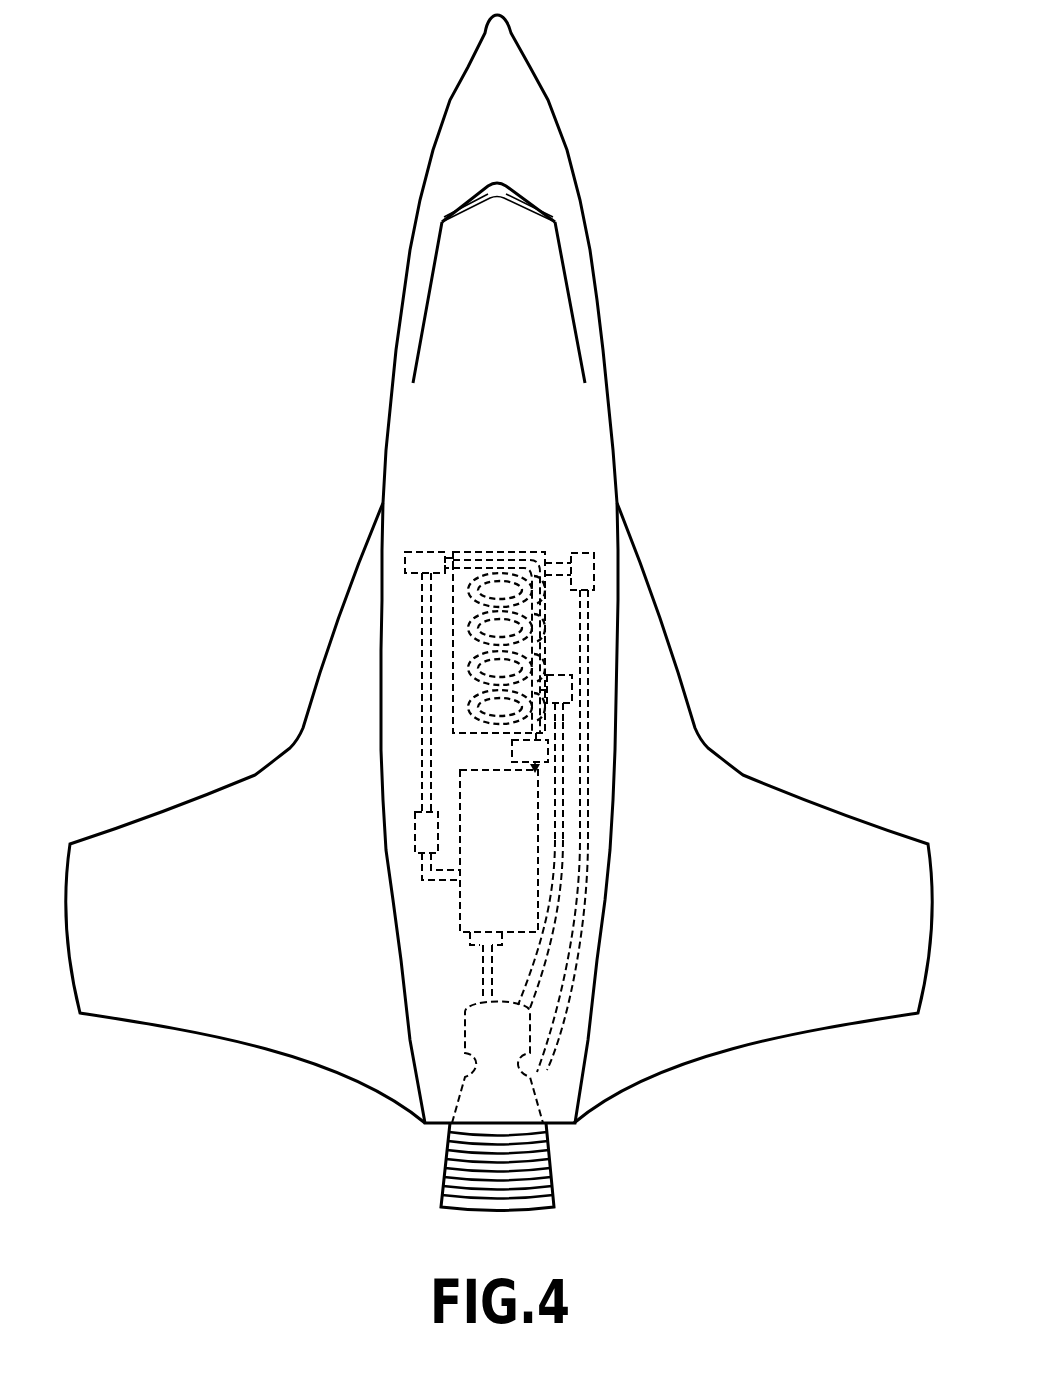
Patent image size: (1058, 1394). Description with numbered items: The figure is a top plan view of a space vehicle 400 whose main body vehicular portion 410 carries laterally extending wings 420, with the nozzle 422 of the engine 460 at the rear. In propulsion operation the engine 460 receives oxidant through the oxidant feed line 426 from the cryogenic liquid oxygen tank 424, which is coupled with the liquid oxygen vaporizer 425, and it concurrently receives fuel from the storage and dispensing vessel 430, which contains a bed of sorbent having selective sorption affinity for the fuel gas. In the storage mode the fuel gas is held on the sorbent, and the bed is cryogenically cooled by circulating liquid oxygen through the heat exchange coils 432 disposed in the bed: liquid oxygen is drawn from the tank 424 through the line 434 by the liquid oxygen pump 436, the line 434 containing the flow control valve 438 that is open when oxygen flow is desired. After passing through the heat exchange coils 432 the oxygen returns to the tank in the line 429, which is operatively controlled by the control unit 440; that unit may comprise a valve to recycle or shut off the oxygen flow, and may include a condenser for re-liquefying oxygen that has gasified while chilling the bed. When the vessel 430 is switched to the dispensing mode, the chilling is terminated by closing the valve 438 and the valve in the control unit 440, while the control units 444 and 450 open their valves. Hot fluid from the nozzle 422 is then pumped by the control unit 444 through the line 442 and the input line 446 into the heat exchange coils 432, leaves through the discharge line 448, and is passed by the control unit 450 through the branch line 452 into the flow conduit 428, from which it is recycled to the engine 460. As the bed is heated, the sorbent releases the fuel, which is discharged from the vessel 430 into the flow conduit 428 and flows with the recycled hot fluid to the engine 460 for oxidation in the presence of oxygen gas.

The space vehicle 400 is at (612, 87).
The main body vehicular portion 410 is at (396, 375).
The wings 420 is at (213, 800).
The nozzle 422 is at (550, 1173).
The cryogenic liquid oxygen tank 424 is at (462, 900).
The liquid oxygen vaporizer 425 is at (477, 942).
The oxidant feed line 426 is at (480, 985).
The flow conduit 428 is at (540, 968).
The line 429 is at (540, 768).
The storage and dispensing vessel 430 is at (545, 650).
The heat exchange coils 432 is at (545, 610).
The line 434 is at (440, 872).
The liquid oxygen pump 436 is at (415, 826).
The flow control valve 438 is at (427, 552).
The control unit 440 is at (512, 748).
The line 442 is at (585, 852).
The control unit 444 is at (597, 555).
The input line 446 is at (553, 566).
The discharge line 448 is at (572, 683).
The control unit 450 is at (565, 703).
The branch line 452 is at (560, 722).
The engine 460 is at (472, 1033).